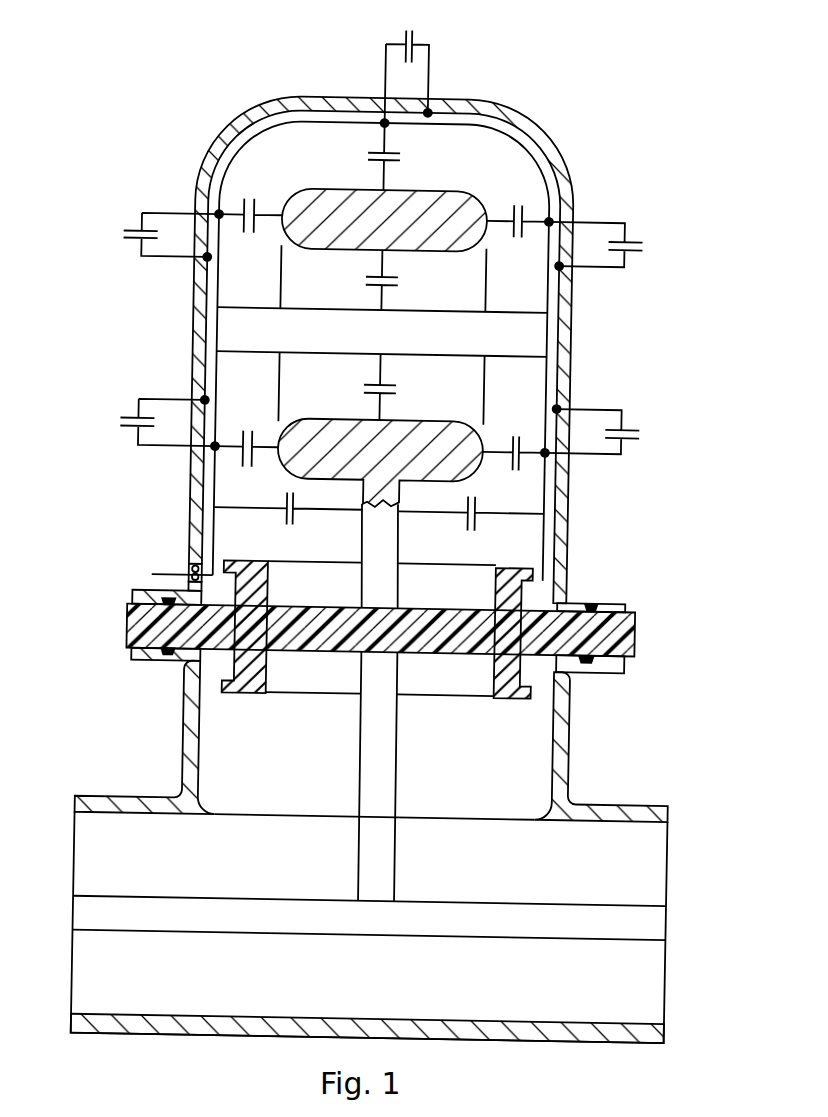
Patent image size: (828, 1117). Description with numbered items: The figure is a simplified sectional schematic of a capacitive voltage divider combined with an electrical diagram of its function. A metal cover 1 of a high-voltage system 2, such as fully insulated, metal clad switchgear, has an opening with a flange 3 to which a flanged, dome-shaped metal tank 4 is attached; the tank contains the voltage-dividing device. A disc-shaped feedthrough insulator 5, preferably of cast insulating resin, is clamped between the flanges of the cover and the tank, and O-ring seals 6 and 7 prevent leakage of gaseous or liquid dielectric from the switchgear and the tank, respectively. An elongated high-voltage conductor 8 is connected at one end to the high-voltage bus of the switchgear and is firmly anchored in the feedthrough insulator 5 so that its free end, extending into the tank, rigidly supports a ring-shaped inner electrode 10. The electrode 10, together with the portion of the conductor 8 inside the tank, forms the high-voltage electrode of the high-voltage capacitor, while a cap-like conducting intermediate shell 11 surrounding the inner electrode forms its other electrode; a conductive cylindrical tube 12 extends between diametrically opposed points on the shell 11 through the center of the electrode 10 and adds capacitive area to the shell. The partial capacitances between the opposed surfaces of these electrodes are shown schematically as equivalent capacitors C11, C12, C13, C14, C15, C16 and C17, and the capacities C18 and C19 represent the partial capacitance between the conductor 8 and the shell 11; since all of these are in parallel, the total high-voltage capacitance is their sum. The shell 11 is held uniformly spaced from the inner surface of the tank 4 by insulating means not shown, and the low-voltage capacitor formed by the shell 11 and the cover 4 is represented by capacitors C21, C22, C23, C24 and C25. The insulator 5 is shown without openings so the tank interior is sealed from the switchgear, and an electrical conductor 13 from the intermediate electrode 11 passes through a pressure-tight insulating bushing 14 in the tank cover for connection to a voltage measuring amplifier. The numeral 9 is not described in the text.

The metal cover 1 is at (124, 808).
The high-voltage system 2 is at (99, 988).
The flange 3 is at (174, 661).
The dome-shaped metal tank 4 is at (191, 497).
The feedthrough insulator 5 is at (127, 629).
The O-ring seal 6 is at (147, 667).
The O-ring seal 7 is at (158, 596).
The high-voltage conductor 8 is at (388, 755).
The base plate 9 is at (449, 916).
The ring-shaped inner electrode 10 is at (311, 204).
The intermediate shell 11 is at (521, 163).
The cylindrical tube 12 is at (537, 364).
The electrical conductor 13 is at (165, 578).
The insulating bushing 14 is at (188, 572).
The equivalent capacitor C11 is at (250, 201).
The equivalent capacitor C12 is at (404, 157).
The equivalent capacitor C13 is at (520, 209).
The equivalent capacitor C14 is at (403, 280).
The equivalent capacitor C15 is at (245, 433).
The equivalent capacitor C16 is at (401, 387).
The equivalent capacitor C17 is at (516, 439).
The partial capacitance C18 is at (471, 527).
The partial capacitance C19 is at (288, 523).
The capacitor C21 is at (153, 234).
The capacitor C22 is at (426, 74).
The capacitor C23 is at (609, 247).
The capacitor C24 is at (154, 420).
The capacitor C25 is at (606, 430).